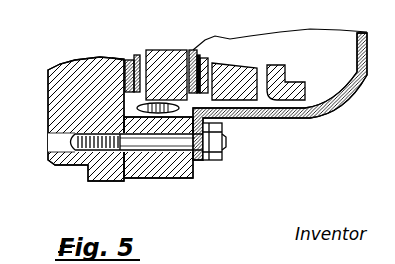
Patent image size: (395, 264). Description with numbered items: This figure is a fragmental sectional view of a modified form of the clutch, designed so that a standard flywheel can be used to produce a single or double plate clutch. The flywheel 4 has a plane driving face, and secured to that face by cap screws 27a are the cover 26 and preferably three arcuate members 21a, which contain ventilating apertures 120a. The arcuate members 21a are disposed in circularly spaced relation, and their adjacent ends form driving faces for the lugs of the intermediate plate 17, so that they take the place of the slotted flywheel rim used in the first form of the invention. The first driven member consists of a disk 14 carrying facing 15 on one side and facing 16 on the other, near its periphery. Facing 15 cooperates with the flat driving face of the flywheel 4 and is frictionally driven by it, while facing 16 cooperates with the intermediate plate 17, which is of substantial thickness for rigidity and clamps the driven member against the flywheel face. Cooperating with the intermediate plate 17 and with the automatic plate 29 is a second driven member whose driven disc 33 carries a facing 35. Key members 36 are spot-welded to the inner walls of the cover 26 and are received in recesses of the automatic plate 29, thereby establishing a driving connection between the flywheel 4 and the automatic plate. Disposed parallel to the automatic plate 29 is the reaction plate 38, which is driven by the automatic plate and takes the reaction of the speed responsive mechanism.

The flywheel 4 is at (72, 85).
The ventilating apertures 120a is at (137, 107).
The facing 15 is at (123, 60).
The disk 14 is at (131, 58).
The facing 16 is at (139, 55).
The intermediate plate 17 is at (157, 68).
The facing 35 is at (193, 50).
The driven disc 33 is at (199, 55).
The key member 36 is at (206, 60).
The automatic plate 29 is at (237, 83).
The reaction plate 38 is at (272, 48).
The cover 26 is at (313, 112).
The cap screw 27a is at (226, 143).
The arcuate member 21a is at (148, 160).